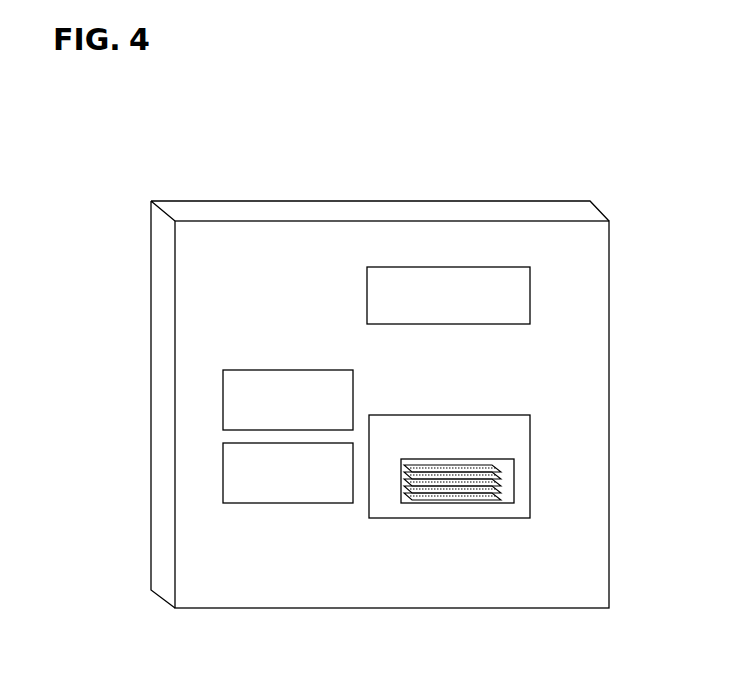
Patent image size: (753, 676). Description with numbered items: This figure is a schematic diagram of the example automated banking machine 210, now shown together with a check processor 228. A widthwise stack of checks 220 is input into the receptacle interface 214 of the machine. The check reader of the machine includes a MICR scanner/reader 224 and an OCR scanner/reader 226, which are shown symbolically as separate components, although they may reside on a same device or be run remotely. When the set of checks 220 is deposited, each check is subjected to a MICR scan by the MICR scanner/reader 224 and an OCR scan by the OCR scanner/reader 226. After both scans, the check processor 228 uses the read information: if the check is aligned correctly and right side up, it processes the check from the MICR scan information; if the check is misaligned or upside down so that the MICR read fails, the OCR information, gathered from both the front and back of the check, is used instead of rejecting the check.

The automated banking machine 210 is at (595, 333).
The receptacle interface 214 is at (514, 497).
The widthwise stack of checks 220 is at (477, 473).
The MICR scanner/reader 224 is at (222, 473).
The OCR scanner/reader 226 is at (222, 392).
The check processor 228 is at (448, 265).